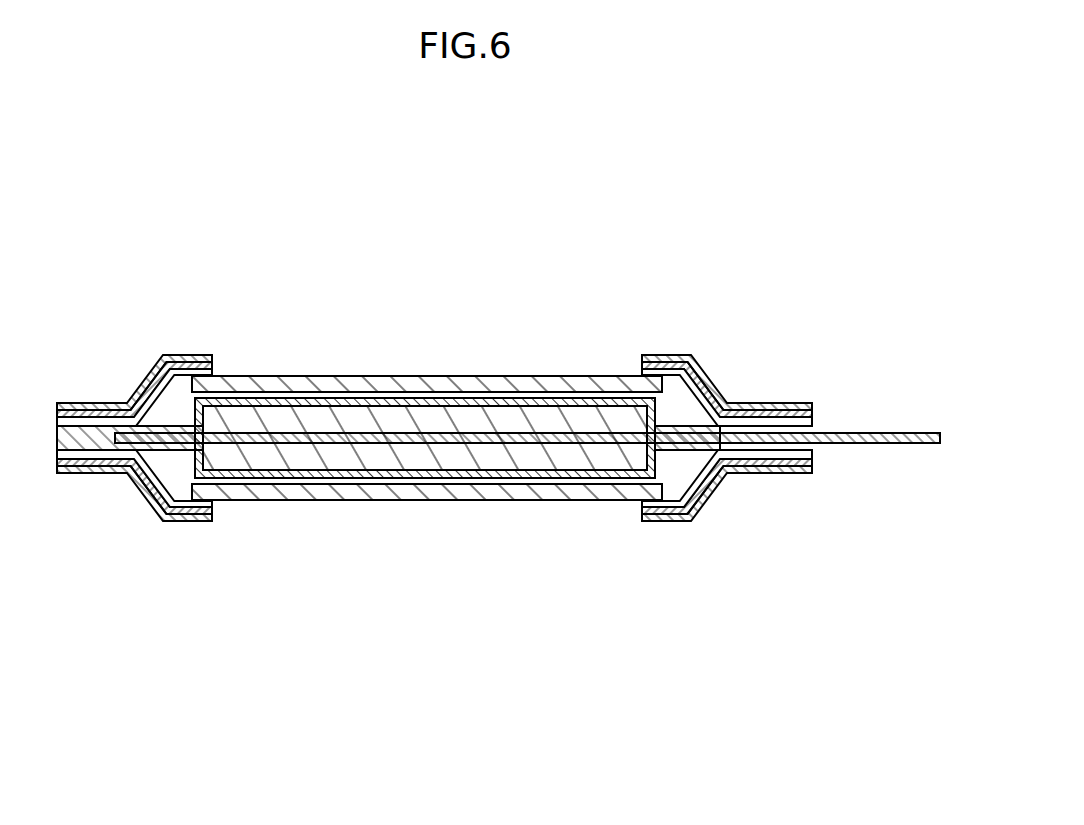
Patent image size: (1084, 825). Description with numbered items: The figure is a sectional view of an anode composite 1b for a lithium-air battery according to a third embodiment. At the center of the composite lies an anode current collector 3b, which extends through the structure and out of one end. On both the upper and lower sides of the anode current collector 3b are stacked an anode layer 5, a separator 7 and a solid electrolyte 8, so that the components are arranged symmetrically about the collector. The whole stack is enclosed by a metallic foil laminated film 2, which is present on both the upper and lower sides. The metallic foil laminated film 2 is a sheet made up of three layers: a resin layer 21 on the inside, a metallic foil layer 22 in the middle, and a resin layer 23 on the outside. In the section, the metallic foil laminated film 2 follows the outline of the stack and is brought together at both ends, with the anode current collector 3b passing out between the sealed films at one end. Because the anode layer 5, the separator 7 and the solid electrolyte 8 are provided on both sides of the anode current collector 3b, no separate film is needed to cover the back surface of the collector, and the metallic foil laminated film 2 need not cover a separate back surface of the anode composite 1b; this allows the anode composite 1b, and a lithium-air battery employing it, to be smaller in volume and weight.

The anode composite 1b is at (498, 435).
The metallic foil laminated film 2 is at (434, 435).
The resin layer 21 is at (137, 245).
The metallic foil layer 22 is at (199, 356).
The resin layer 23 is at (158, 355).
The anode current collector 3b is at (880, 436).
The anode layer 5 is at (380, 427).
The separator 7 is at (577, 396).
The solid electrolyte 8 is at (490, 385).